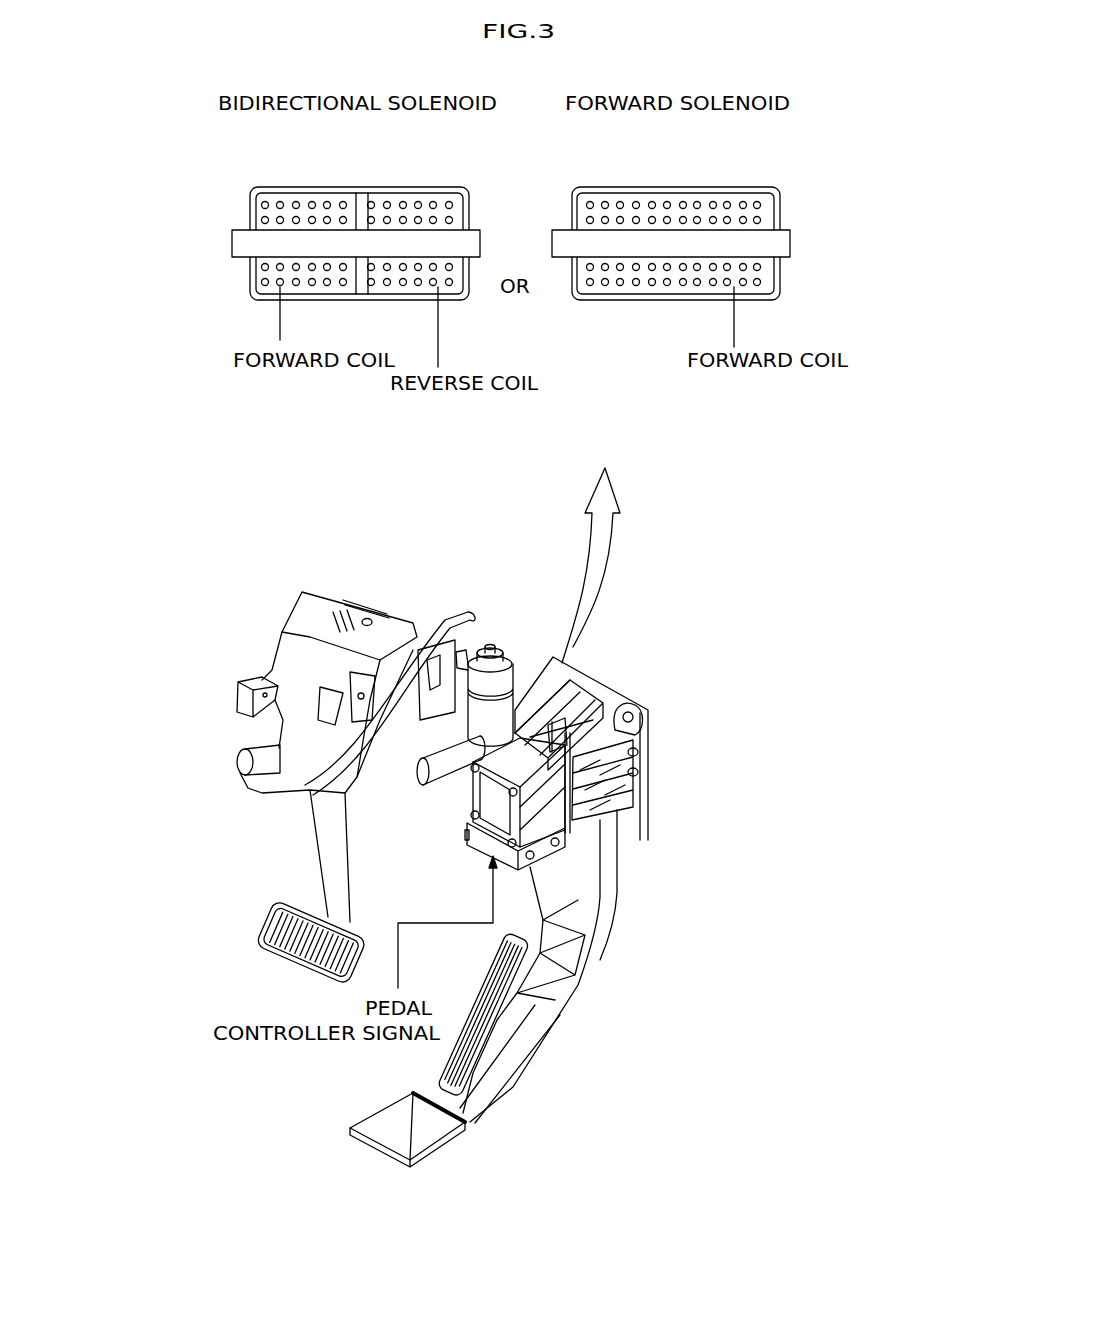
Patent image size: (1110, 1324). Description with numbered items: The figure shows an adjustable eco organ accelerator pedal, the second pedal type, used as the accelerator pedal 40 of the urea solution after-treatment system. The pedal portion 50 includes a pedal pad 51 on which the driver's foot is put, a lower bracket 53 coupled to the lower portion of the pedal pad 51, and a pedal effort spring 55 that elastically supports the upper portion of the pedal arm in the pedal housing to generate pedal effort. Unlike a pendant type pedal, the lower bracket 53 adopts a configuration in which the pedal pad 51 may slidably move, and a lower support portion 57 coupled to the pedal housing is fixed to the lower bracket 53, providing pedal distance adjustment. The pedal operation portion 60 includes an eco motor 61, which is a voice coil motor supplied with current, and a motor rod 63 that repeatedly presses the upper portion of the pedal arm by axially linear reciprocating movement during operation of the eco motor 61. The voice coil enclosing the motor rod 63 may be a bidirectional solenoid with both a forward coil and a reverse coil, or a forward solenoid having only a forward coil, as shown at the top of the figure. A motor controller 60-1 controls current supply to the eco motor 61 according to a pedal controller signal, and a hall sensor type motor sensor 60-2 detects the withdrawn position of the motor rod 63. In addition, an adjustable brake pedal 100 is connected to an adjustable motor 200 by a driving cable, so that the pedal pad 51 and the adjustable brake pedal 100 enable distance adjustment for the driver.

The eco motor 61 is at (427, 190).
The motor rod 63 is at (467, 240).
The accelerator pedal 40 is at (677, 766).
The pedal portion 50 is at (596, 953).
The pedal pad 51 is at (530, 1002).
The lower bracket 53 is at (555, 923).
The pedal effort spring 55 is at (640, 780).
The lower support portion 57 is at (508, 1063).
The pedal operation portion 60 is at (490, 795).
The motor controller 60-1 is at (490, 855).
The motor sensor 60-2 is at (588, 700).
The adjustable brake pedal 100 is at (315, 845).
The adjustable motor 200 is at (502, 700).